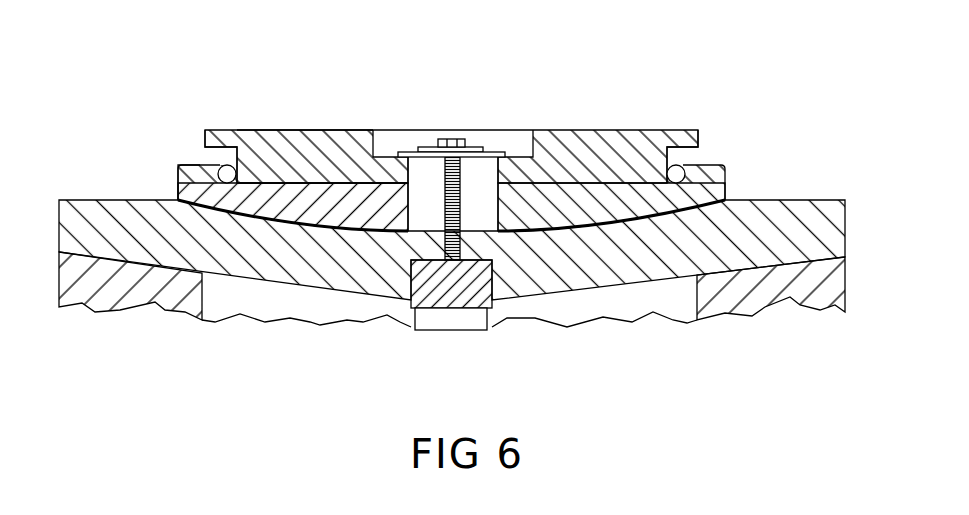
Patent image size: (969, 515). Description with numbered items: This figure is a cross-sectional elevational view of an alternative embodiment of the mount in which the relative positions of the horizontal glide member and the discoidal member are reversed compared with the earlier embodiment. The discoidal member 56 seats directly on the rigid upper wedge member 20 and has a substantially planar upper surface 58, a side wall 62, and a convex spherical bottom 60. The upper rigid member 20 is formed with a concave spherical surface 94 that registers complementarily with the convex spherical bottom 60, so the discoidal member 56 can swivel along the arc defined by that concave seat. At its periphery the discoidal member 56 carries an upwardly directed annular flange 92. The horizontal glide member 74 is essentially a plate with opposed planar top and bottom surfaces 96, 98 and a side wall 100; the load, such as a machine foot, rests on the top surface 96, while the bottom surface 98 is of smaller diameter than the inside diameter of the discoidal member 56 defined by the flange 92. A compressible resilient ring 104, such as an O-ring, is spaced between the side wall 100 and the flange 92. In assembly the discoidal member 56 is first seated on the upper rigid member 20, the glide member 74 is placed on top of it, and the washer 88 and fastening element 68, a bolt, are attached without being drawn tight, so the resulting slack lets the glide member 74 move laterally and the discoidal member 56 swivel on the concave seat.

The upper rigid member 20 is at (845, 222).
The discoidal member 56 is at (605, 205).
The upper surface 58 is at (210, 193).
The convex spherical bottom 60 is at (336, 222).
The side wall 62 is at (728, 180).
The fastening element 68 is at (457, 140).
The horizontal glide member 74 is at (570, 152).
The washer 88 is at (490, 153).
The annular flange 92 is at (178, 165).
The concave spherical surface 94 is at (312, 205).
The top planar surface 96 is at (312, 131).
The bottom planar surface 98 is at (357, 182).
The side wall 100 is at (237, 165).
The compressible resilient ring 104 is at (673, 165).